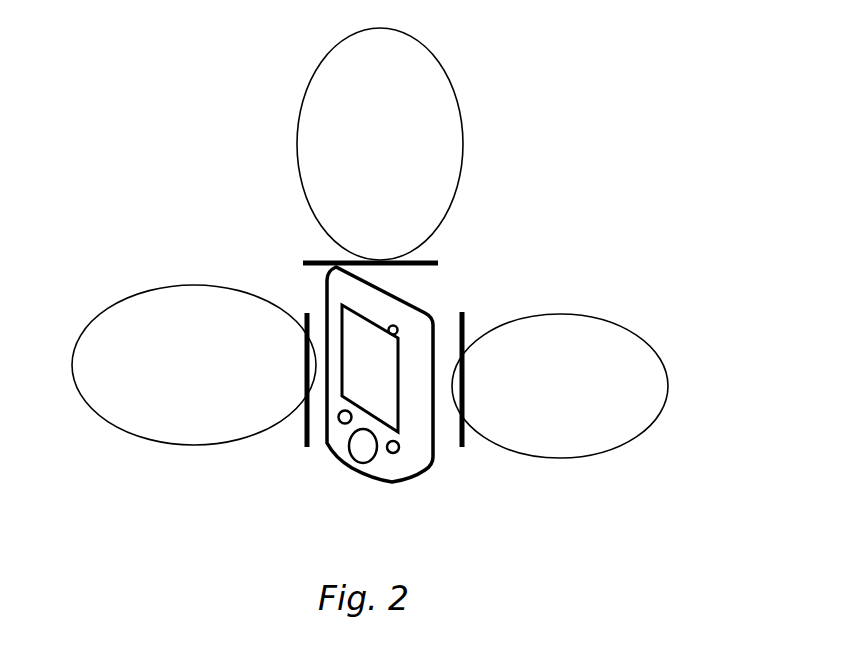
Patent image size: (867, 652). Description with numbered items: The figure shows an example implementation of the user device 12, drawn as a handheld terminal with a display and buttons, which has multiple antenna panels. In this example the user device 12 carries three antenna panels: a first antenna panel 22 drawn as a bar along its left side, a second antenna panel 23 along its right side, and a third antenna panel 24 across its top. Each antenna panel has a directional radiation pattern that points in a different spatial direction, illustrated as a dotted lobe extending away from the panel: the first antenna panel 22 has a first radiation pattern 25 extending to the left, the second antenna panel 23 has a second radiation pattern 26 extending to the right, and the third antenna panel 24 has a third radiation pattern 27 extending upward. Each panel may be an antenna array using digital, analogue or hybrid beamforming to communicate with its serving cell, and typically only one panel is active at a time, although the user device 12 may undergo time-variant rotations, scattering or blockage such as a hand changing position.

The user device 12 is at (362, 472).
The first antenna panel 22 is at (302, 430).
The second antenna panel 23 is at (465, 332).
The third antenna panel 24 is at (428, 258).
The first radiation pattern 25 is at (130, 437).
The second radiation pattern 26 is at (643, 335).
The third radiation pattern 27 is at (457, 105).